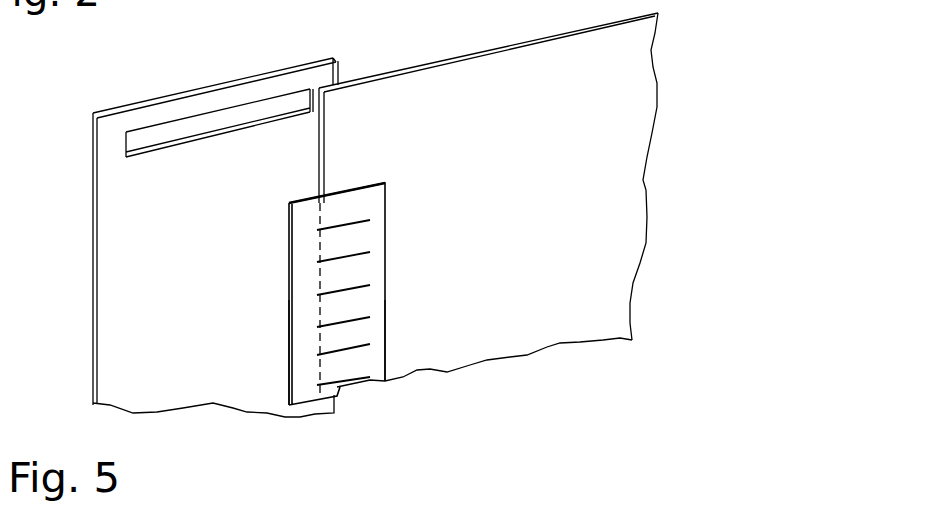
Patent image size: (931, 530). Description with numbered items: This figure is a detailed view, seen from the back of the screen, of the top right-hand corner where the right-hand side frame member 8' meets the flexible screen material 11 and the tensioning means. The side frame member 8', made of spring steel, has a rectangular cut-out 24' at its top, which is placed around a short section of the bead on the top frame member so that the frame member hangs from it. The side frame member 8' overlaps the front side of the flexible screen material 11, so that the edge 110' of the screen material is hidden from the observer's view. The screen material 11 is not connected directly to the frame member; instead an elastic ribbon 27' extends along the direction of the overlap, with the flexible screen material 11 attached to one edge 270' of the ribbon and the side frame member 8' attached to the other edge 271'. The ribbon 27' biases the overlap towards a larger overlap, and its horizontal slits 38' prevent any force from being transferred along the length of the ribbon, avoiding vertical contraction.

The right-hand side frame member 8' is at (215, 279).
The flexible screen material 11 is at (646, 218).
The rectangular cut-out 24' is at (170, 169).
The elastic ribbon 27' is at (408, 271).
The horizontal slits 38' is at (394, 301).
The edge of the flexible screen material 110' is at (416, 197).
The edge of the elastic ribbon 270' is at (477, 300).
The edge of the elastic ribbon 271' is at (154, 345).